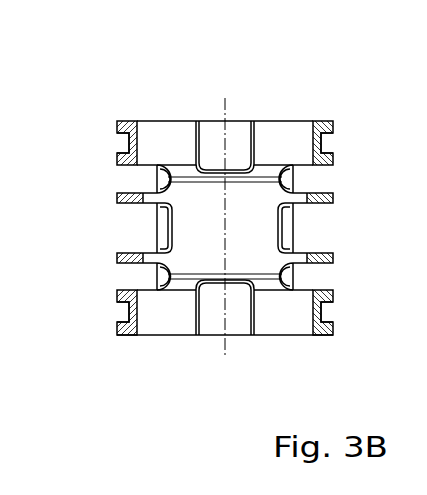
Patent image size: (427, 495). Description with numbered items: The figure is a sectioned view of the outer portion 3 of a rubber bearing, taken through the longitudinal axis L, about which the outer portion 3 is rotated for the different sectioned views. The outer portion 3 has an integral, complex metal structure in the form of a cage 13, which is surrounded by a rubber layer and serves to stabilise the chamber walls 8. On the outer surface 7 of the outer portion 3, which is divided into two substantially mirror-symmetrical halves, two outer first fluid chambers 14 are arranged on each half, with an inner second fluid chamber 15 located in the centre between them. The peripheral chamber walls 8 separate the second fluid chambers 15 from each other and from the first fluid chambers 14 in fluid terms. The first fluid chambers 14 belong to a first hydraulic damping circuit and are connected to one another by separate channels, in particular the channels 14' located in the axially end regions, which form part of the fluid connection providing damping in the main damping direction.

The outer portion 3 is at (116, 116).
The cage 13 is at (118, 160).
The first fluid chambers 14 is at (200, 227).
The channels 14' is at (185, 227).
The second fluid chambers 15 is at (150, 225).
The outer surface 7 is at (118, 200).
The chamber walls 8 is at (118, 258).
The longitudinal axis L is at (223, 112).